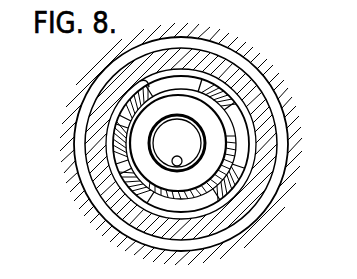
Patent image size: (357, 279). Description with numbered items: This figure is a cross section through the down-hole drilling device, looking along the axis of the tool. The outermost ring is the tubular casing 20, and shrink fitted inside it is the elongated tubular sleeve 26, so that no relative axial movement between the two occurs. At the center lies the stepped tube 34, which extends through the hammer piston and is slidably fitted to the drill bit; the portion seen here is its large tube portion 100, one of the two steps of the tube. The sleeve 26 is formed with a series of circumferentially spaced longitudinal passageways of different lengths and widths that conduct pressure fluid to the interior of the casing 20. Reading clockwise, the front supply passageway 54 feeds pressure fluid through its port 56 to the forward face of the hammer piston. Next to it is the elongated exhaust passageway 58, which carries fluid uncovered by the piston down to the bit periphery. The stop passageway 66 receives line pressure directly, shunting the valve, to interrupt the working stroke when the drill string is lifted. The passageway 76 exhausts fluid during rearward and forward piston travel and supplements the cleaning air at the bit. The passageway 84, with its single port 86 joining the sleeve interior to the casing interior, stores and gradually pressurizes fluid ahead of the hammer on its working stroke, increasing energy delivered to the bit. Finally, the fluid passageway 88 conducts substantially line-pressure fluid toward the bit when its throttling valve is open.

The tubular casing 20 is at (263, 82).
The tubular sleeve 26 is at (188, 163).
The stepped tube 34 is at (177, 143).
The front supply passageway 54 is at (250, 146).
The port 56 is at (276, 120).
The exhaust passageway 58 is at (215, 204).
The stop passageway 66 is at (133, 199).
The passageway 76 is at (112, 134).
The passageway 84 is at (148, 88).
The port 86 is at (144, 83).
The fluid passageway 88 is at (226, 76).
The large tube portion 100 is at (175, 167).